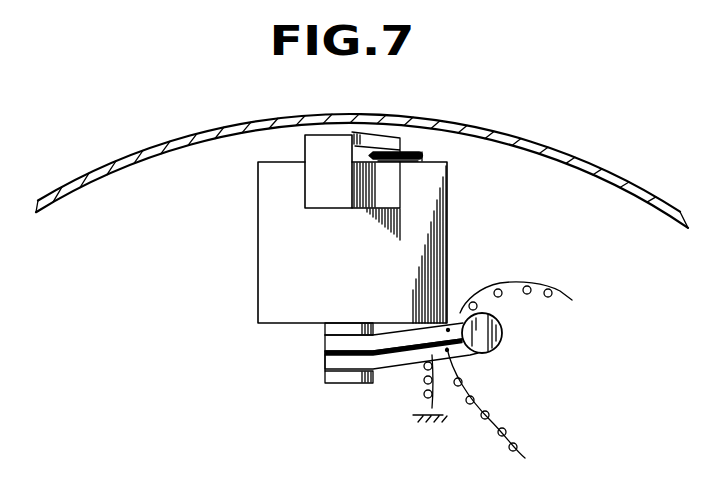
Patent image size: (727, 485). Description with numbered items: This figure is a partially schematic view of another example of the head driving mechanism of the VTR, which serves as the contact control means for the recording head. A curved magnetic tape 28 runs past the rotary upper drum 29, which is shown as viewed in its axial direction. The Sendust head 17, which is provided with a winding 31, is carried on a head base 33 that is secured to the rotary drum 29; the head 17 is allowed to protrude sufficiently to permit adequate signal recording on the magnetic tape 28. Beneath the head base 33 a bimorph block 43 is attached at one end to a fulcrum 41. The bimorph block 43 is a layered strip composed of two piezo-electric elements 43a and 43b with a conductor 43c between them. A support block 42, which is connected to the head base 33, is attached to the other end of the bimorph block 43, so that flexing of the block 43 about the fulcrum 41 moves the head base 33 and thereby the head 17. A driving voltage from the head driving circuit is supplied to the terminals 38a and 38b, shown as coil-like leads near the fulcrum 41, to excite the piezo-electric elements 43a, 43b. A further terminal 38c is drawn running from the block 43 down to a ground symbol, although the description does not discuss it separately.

The Sendust head 17 is at (368, 131).
The magnetic tape 28 is at (547, 153).
The rotary upper drum 29 is at (680, 227).
The winding 31 is at (422, 151).
The head base 33 is at (278, 175).
The terminal 38a is at (542, 277).
The terminal 38b is at (502, 431).
The spring 38c is at (423, 377).
The fulcrum 41 is at (502, 338).
The support block 42 is at (342, 383).
The bimorph block 43 is at (333, 391).
The piezo-electric element 43a is at (327, 342).
The piezo-electric element 43b is at (228, 331).
The conductor 43c is at (327, 355).